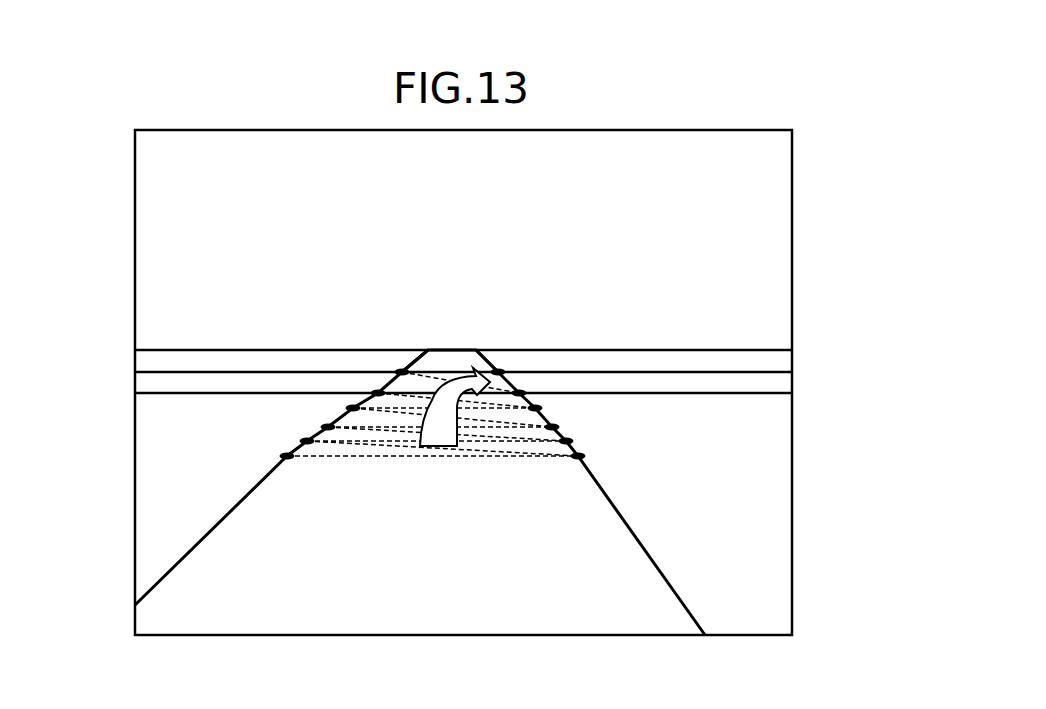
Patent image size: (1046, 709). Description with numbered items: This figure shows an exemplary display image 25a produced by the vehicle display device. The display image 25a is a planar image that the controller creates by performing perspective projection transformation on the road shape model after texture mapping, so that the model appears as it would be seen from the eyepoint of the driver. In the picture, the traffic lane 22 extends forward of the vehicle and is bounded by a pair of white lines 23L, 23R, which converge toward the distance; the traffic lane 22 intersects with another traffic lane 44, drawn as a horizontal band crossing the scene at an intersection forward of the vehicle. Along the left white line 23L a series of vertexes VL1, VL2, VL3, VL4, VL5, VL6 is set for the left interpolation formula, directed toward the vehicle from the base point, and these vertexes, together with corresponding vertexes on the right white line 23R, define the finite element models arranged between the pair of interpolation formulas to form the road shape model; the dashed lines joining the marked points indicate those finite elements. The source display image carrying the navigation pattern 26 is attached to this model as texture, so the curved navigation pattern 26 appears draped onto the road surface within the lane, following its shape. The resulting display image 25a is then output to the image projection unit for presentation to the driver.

The traffic lane 22 is at (440, 626).
The traffic lane 44 is at (782, 383).
The white line 23L is at (191, 545).
The white line 23R is at (693, 613).
The display image 25a is at (460, 365).
The navigation pattern 26 is at (457, 375).
The vertex VL1 is at (402, 372).
The vertex VL2 is at (378, 393).
The vertex VL3 is at (353, 408).
The vertex VL4 is at (328, 427).
The vertex VL5 is at (307, 441).
The vertex VL6 is at (287, 456).